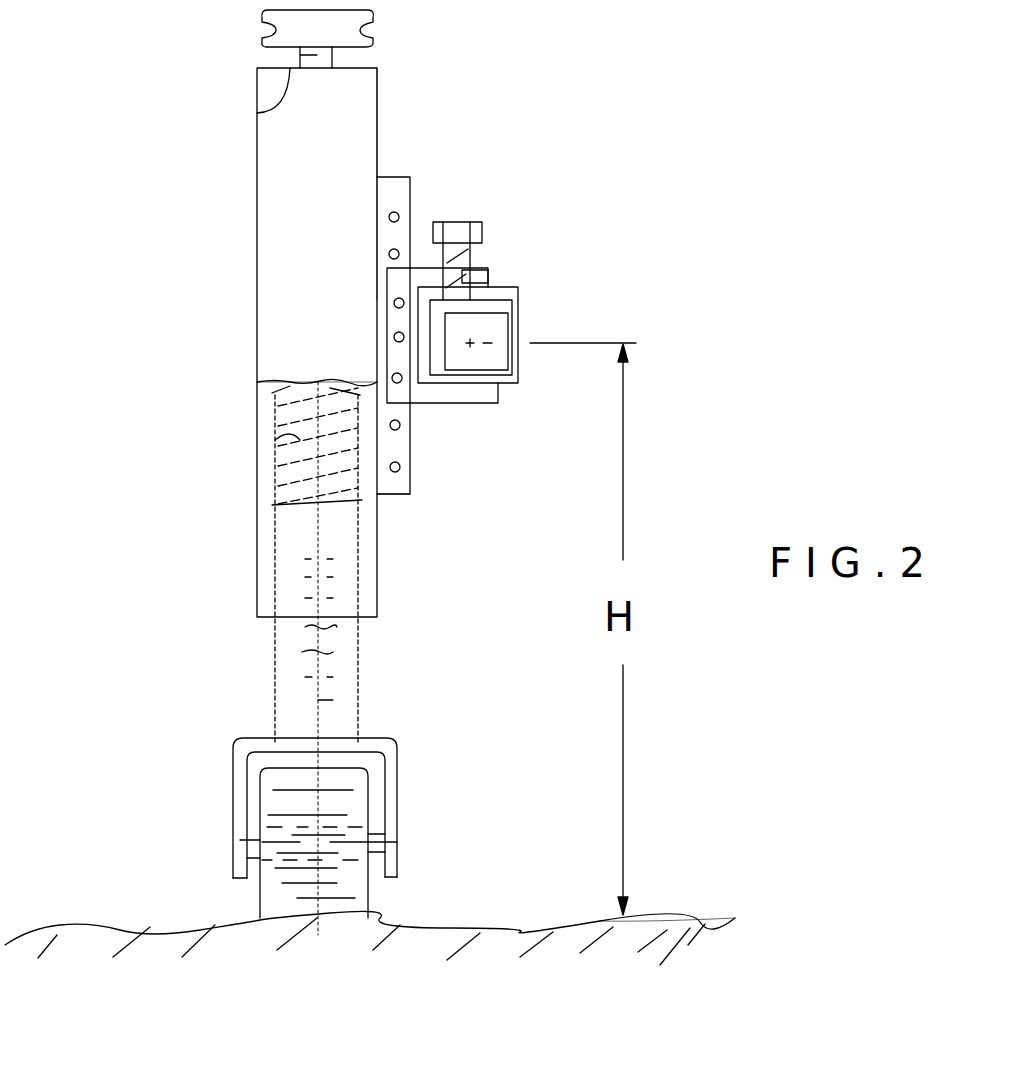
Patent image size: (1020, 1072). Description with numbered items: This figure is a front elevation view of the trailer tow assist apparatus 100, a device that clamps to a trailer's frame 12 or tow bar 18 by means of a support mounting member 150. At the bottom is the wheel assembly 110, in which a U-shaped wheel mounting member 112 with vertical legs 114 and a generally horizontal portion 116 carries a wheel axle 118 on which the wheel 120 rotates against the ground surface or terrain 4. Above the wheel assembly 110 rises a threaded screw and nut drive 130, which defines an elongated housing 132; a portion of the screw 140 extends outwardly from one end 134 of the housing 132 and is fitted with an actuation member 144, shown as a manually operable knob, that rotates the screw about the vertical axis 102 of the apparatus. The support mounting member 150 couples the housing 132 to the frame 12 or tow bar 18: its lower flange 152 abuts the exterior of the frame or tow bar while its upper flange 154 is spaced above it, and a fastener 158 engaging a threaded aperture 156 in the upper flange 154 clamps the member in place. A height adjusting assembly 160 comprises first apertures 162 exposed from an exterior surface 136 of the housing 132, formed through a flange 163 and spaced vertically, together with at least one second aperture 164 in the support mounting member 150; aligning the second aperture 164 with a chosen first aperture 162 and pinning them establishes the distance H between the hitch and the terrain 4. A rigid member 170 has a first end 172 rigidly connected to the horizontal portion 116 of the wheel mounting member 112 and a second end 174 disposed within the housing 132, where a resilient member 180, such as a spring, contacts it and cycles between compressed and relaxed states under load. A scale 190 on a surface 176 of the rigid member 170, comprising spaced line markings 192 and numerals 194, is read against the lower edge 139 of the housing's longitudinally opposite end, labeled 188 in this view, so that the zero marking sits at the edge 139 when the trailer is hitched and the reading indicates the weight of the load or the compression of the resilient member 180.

The ground surface or terrain 4 is at (713, 915).
The frame 12 is at (525, 330).
The tow bar 18 is at (559, 326).
The trailer tow assist apparatus 100 is at (620, 128).
The vertical axis 102 is at (318, 920).
The wheel assembly 110 is at (132, 858).
The wheel mounting member 112 is at (233, 780).
The vertical legs 114 is at (397, 773).
The horizontal portion 116 is at (385, 736).
The wheel axle 118 is at (372, 835).
The wheel 120 is at (355, 898).
The threaded screw and nut drive 130 is at (257, 258).
The elongated housing 132 is at (257, 343).
The one end of the housing 134 is at (257, 113).
The exterior surface of the housing 136 is at (377, 88).
The edge of the housing 139 is at (363, 623).
The screw 140 is at (300, 55).
The actuation member 144 is at (302, 25).
The support mounting member 150 is at (609, 238).
The lower flange 152 is at (480, 403).
The upper flange 154 is at (490, 278).
The threaded aperture 156 is at (467, 265).
The fastener 158 is at (467, 222).
The height adjusting assembly 160 is at (441, 157).
The first apertures 162 is at (413, 230).
The flange 163 is at (399, 497).
The second aperture 164 is at (393, 334).
The rigid member 170 is at (348, 641).
The first end of the rigid member 172 is at (290, 735).
The second end of the rigid member 174 is at (290, 515).
The surface of the rigid member 176 is at (348, 667).
The resilient member 180 is at (293, 440).
The tube bottom wall 188 is at (350, 588).
The scale 190 is at (188, 657).
The line markings 192 is at (312, 677).
The numerals 194 is at (275, 640).